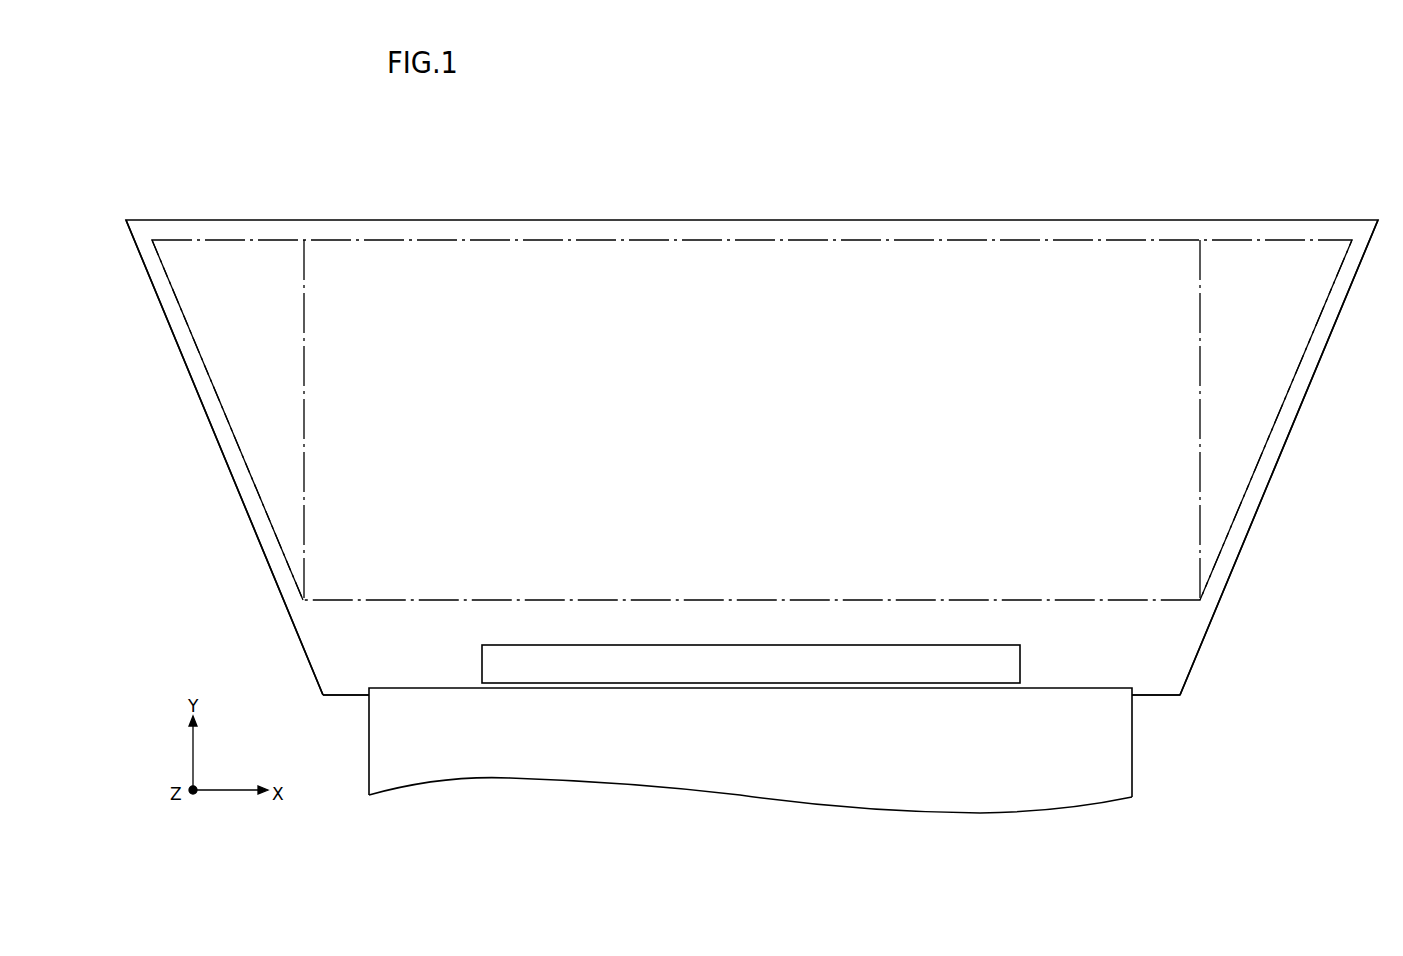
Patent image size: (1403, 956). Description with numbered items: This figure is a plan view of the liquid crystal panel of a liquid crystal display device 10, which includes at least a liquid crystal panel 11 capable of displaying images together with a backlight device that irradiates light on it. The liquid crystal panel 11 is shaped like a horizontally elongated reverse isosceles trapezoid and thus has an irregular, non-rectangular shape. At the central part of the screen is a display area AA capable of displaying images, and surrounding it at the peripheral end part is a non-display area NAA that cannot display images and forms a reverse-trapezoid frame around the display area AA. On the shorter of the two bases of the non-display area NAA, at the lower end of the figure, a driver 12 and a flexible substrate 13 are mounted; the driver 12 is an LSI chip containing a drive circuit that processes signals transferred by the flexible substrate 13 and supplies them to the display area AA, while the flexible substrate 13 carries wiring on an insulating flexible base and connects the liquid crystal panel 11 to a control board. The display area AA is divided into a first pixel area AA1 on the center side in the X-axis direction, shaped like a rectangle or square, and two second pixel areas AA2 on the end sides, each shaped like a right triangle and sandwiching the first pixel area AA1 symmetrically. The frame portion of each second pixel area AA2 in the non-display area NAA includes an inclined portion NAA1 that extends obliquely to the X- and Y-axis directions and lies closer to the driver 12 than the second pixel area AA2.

The liquid crystal display device 10 is at (760, 103).
The liquid crystal panel 11 is at (614, 220).
The driver 12 is at (515, 672).
The flexible substrate 13 is at (395, 752).
The display area AA is at (1052, 240).
The first pixel area AA1 is at (1200, 273).
The second pixel area AA2 is at (210, 380).
The non-display area NAA is at (316, 640).
The inclined portion NAA1 is at (240, 473).